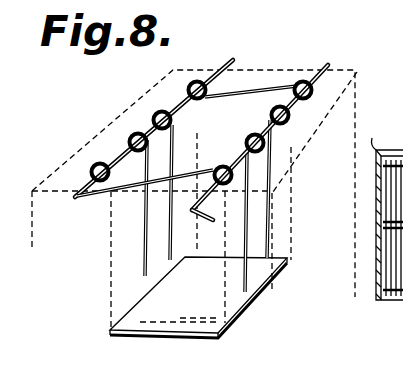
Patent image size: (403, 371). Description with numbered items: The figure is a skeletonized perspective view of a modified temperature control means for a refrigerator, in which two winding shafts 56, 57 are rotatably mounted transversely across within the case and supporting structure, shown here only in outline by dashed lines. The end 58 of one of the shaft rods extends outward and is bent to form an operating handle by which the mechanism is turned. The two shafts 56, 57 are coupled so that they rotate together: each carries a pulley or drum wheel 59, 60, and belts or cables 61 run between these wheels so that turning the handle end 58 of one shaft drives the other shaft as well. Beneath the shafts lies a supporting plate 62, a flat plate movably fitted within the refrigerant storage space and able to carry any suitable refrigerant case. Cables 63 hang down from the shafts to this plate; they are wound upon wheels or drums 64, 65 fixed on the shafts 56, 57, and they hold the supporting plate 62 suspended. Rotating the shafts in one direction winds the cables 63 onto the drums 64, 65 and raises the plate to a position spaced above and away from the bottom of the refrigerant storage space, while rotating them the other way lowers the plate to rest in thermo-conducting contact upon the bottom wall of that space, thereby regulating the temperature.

The winding shaft 56 is at (330, 66).
The winding shaft 57 is at (236, 57).
The end of rod 58 is at (208, 224).
The pulley or drum wheel 59 is at (306, 92).
The pulley or drum wheel 60 is at (93, 167).
The belt or cable 61 is at (133, 183).
The supporting plate 62 is at (210, 322).
The cable 63 is at (270, 218).
The wheel or drum 64 is at (288, 125).
The wheel or drum 65 is at (157, 110).